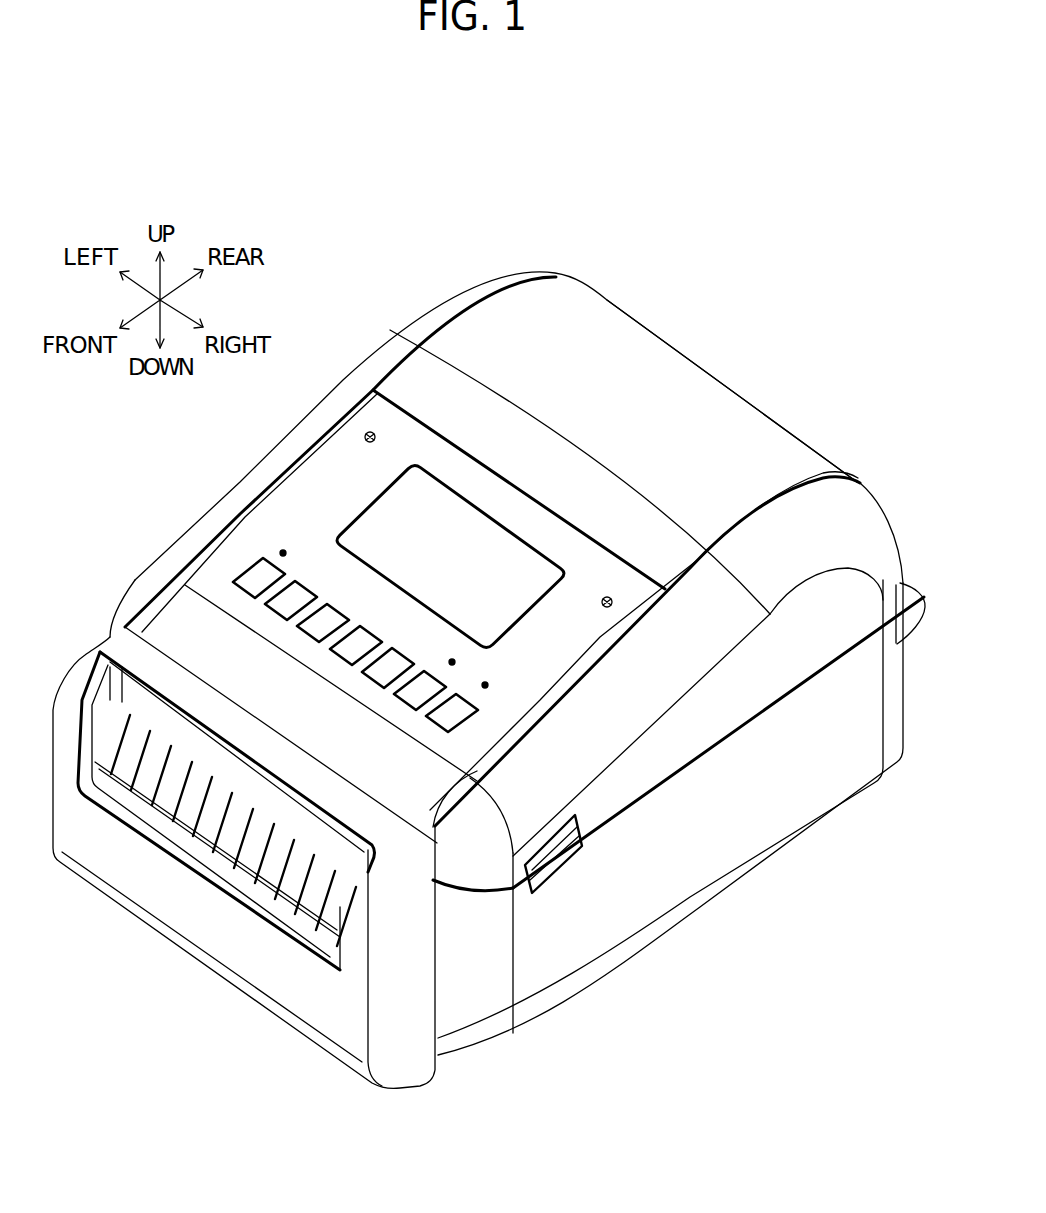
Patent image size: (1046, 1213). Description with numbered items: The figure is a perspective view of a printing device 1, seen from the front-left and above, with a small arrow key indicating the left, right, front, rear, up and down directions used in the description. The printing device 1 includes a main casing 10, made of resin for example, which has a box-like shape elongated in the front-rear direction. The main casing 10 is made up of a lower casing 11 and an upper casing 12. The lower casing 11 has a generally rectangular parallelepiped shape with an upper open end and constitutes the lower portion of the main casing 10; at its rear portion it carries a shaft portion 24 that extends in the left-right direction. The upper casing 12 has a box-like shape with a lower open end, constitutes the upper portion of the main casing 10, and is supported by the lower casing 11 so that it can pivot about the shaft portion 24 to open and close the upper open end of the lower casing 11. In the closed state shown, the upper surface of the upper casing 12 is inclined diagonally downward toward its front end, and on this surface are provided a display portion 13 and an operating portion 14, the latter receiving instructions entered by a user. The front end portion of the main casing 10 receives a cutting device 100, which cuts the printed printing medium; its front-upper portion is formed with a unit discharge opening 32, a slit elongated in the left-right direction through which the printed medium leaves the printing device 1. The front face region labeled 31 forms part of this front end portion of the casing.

The printing device 1 is at (722, 296).
The main casing 10 is at (572, 360).
The lower casing 11 is at (720, 807).
The upper casing 12 is at (640, 407).
The display portion 13 is at (445, 552).
The operating portion 14 is at (247, 565).
The shaft portion 24 is at (912, 620).
The front wall 31 is at (280, 970).
The unit discharge opening 32 is at (288, 826).
The cutting device 100 is at (183, 893).